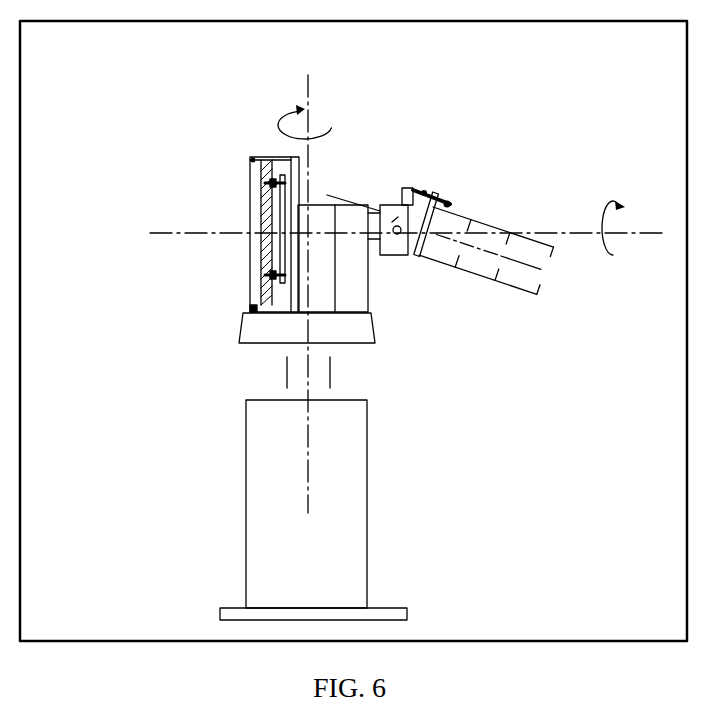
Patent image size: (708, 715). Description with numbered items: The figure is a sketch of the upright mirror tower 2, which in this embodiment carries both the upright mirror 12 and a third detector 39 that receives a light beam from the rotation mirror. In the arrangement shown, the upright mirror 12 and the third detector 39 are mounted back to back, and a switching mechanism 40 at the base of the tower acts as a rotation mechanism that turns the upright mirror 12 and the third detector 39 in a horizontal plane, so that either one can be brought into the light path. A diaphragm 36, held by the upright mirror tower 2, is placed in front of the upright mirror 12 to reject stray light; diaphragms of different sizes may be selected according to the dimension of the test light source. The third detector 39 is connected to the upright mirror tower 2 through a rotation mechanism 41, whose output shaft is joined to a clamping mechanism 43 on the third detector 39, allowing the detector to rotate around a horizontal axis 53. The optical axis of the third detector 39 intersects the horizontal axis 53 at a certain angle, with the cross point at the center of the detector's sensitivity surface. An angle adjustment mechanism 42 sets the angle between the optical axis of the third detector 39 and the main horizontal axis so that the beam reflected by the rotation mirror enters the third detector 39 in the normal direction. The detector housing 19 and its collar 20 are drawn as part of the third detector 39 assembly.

The upright mirror tower 2 is at (348, 528).
The upright mirror 12 is at (265, 267).
The cylindrical tube 19 is at (477, 277).
The collar 20 is at (477, 217).
The diaphragm 36 is at (253, 160).
The third detector 39 is at (440, 203).
The switching mechanism 40 is at (258, 367).
The rotation mechanism 41 is at (348, 273).
The angle adjustment mechanism 42 is at (427, 190).
The clamping mechanism 43 is at (393, 204).
The horizontal axis 53 is at (580, 233).